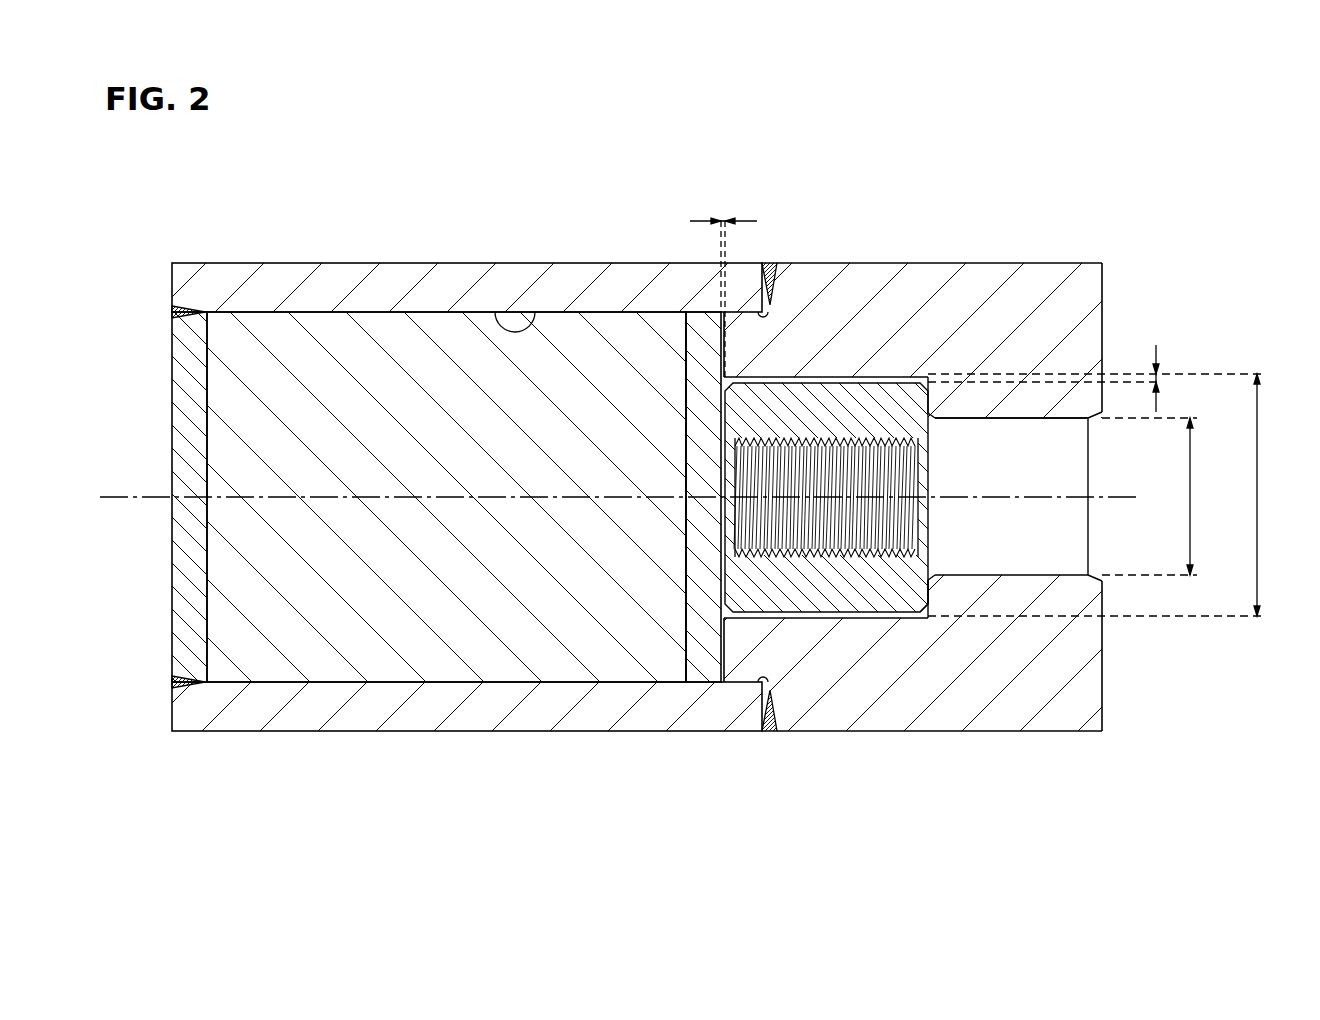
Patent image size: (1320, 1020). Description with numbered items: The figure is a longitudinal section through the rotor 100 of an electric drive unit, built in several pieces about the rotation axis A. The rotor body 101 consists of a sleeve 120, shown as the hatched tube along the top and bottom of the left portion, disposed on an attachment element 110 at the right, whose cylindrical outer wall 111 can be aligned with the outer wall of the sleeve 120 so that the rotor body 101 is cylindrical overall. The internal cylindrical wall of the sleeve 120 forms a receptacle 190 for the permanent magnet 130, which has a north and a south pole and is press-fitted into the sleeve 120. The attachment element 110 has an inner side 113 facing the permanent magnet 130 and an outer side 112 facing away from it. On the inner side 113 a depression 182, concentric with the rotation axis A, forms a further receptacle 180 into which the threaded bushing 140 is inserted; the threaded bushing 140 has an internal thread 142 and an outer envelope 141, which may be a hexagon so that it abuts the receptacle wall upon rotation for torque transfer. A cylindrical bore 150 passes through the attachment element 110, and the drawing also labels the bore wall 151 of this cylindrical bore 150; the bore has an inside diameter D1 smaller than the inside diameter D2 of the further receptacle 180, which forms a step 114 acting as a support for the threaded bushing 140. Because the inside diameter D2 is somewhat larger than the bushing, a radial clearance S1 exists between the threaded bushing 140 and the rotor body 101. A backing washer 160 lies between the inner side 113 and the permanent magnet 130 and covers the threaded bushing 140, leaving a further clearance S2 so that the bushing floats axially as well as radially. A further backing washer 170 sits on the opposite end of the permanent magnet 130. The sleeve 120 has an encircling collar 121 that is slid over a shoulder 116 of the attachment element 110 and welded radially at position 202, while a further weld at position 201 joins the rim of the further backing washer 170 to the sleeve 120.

The rotor 100 is at (357, 222).
The rotor body 101 is at (940, 262).
The attachment element 110 is at (988, 283).
The outer wall 111 is at (1052, 262).
The outer side 112 is at (1104, 644).
The inner side 113 is at (720, 647).
The step 114 is at (917, 583).
The shoulder 116 is at (745, 345).
The sleeve 120 is at (290, 290).
The encircling collar 121 is at (743, 707).
The permanent magnet 130 is at (430, 332).
The threaded bushing 140 is at (823, 408).
The outer envelope 141 is at (818, 615).
The internal thread 142 is at (847, 562).
The cylindrical bore 150 is at (1040, 530).
The bore wall 151 is at (1035, 420).
The backing washer 160 is at (685, 628).
The further backing washer 170 is at (188, 413).
The further receptacle 180 is at (840, 382).
The depression 182 is at (931, 497).
The receptacle 190 is at (533, 330).
The welding position 201 is at (175, 310).
The welding position 202 is at (771, 258).
The rotation axis A is at (128, 506).
The clearance S1 is at (1160, 380).
The further clearance S2 is at (690, 220).
The inside diameter D1 is at (1195, 497).
The inside diameter D2 is at (1262, 497).